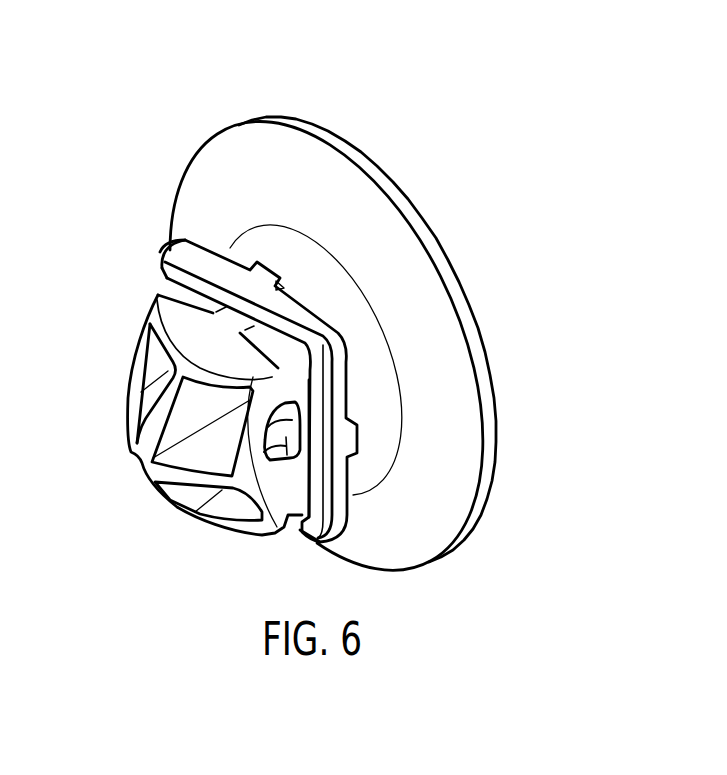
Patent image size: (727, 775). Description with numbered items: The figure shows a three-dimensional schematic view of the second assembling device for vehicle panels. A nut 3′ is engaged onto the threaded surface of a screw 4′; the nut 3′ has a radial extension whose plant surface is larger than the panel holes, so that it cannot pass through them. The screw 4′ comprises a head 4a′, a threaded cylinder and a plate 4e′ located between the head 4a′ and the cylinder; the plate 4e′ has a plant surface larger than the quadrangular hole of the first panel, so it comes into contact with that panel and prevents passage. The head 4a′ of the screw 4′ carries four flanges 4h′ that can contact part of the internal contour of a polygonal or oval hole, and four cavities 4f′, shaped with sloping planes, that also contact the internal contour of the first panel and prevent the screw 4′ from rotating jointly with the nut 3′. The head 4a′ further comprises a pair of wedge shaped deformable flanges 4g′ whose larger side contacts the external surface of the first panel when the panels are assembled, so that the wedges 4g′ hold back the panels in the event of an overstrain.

The nut 3′ is at (368, 140).
The screw 4′ is at (226, 392).
The head 4a′ is at (145, 402).
The plate 4e′ is at (307, 522).
The cavities 4f′ is at (290, 376).
The wedge shaped deformable flanges 4g′ is at (318, 365).
The flanges 4h′ is at (197, 293).